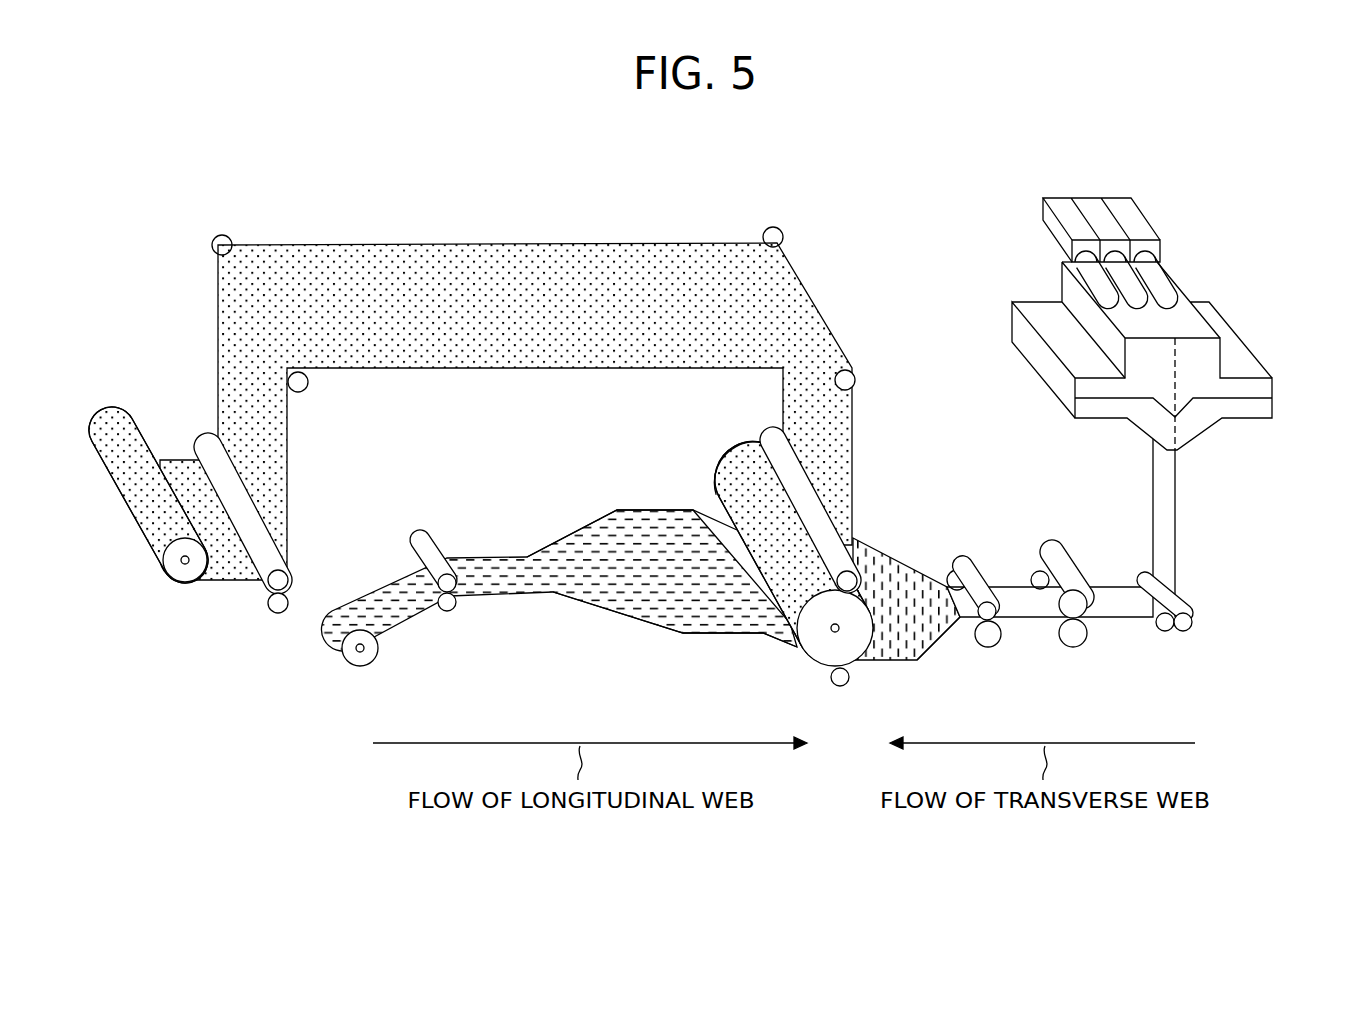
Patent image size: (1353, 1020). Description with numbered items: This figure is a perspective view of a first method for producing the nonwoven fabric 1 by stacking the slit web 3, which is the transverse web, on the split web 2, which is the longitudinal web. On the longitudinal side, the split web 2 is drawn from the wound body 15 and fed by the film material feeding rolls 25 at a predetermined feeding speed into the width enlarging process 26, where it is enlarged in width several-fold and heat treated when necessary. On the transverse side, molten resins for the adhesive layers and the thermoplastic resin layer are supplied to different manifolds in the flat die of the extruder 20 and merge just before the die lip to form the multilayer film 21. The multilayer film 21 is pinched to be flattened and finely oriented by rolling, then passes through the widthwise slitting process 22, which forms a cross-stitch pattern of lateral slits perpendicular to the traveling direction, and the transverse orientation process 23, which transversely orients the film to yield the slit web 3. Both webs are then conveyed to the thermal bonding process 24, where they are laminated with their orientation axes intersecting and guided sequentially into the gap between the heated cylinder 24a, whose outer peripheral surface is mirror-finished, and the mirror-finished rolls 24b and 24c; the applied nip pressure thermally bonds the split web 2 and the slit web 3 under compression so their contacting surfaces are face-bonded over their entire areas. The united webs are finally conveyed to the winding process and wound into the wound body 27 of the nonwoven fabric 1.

The nonwoven fabric 1 is at (302, 258).
The split web 2 is at (372, 598).
The slit web 3 is at (880, 556).
The wound body 15 is at (348, 655).
The extruder 20 is at (1237, 333).
The multilayer film 21 is at (1175, 530).
The widthwise slitting process 22 is at (966, 562).
The transverse orientation process 23 is at (937, 651).
The thermal bonding process 24 is at (778, 546).
The heated cylinder 24a is at (817, 653).
The mirror-finished roll 24b is at (848, 685).
The mirror-finished roll 24c is at (768, 441).
The film material feeding rolls 25 is at (432, 538).
The width enlarging process 26 is at (567, 536).
The wound body 27 is at (122, 412).